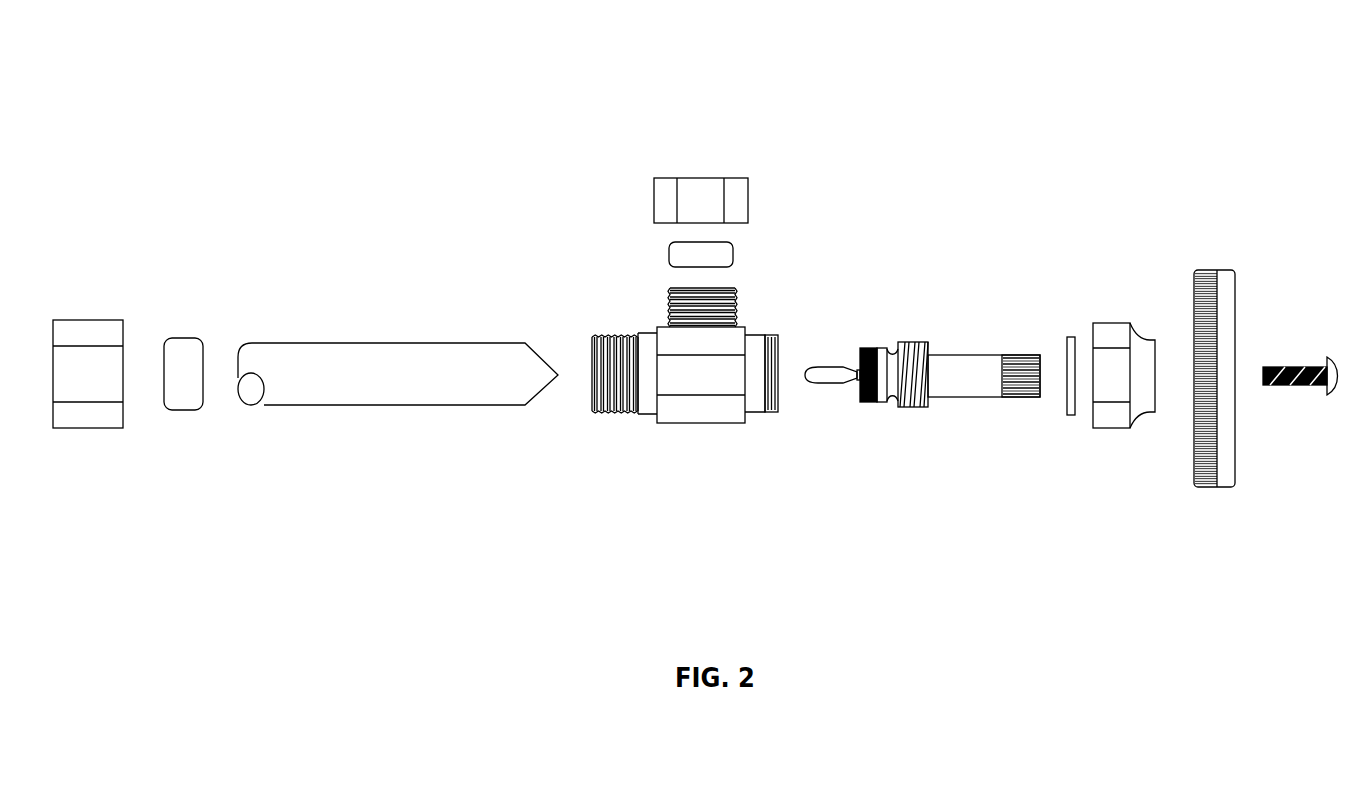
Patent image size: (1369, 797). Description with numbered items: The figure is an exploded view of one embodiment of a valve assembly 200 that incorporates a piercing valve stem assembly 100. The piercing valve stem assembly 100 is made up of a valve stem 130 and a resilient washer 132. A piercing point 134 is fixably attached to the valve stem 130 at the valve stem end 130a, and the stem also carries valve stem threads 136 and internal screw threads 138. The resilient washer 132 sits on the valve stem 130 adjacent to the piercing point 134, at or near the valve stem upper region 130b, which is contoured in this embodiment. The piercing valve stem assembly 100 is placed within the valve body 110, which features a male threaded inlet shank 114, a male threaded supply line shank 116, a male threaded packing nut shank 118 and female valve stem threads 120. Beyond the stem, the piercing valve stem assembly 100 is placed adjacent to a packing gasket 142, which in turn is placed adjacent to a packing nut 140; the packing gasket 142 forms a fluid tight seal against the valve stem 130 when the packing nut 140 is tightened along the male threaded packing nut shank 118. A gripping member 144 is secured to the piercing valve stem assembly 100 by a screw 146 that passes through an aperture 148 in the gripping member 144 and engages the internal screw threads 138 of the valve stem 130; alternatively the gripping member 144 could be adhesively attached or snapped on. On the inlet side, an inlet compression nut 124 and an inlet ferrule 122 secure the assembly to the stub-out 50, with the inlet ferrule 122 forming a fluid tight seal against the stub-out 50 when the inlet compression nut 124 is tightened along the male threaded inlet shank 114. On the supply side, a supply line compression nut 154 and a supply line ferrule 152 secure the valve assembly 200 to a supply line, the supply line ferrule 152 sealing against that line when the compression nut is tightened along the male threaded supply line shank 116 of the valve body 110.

The valve assembly 200 is at (790, 113).
The stub-out 50 is at (365, 343).
The piercing valve stem assembly 100 is at (915, 418).
The valve body 110 is at (703, 423).
The male threaded inlet shank 114 is at (603, 415).
The male threaded supply line shank 116 is at (653, 300).
The male threaded packing nut shank 118 is at (766, 334).
The female valve stem threads 120 is at (780, 392).
The inlet ferrule 122 is at (183, 410).
The inlet compression nut 124 is at (88, 320).
The valve stem 130 is at (942, 354).
The valve stem end 130a is at (852, 396).
The valve stem upper region 130b is at (888, 403).
The resilient washer 132 is at (860, 403).
The piercing point 134 is at (795, 392).
The valve stem threads 136 is at (922, 407).
The internal screw threads 138 is at (1037, 400).
The packing nut 140 is at (1112, 428).
The packing gasket 142 is at (1068, 337).
The gripping member 144 is at (1232, 270).
The screw 146 is at (1295, 385).
The aperture 148 is at (1235, 377).
The supply line ferrule 152 is at (668, 247).
The supply line compression nut 154 is at (700, 178).